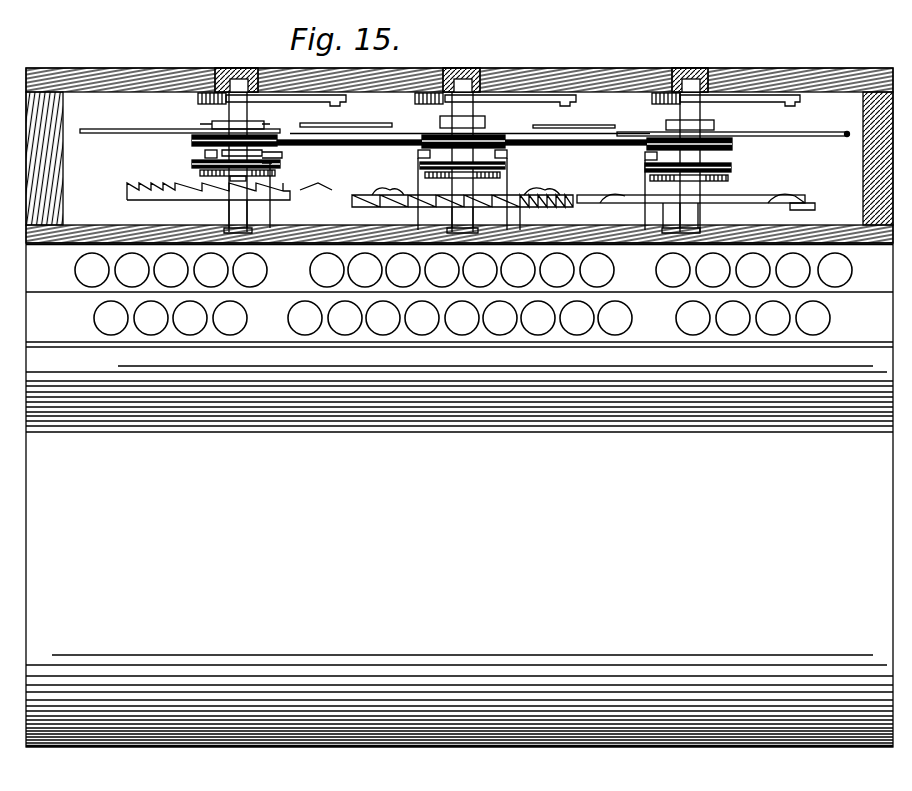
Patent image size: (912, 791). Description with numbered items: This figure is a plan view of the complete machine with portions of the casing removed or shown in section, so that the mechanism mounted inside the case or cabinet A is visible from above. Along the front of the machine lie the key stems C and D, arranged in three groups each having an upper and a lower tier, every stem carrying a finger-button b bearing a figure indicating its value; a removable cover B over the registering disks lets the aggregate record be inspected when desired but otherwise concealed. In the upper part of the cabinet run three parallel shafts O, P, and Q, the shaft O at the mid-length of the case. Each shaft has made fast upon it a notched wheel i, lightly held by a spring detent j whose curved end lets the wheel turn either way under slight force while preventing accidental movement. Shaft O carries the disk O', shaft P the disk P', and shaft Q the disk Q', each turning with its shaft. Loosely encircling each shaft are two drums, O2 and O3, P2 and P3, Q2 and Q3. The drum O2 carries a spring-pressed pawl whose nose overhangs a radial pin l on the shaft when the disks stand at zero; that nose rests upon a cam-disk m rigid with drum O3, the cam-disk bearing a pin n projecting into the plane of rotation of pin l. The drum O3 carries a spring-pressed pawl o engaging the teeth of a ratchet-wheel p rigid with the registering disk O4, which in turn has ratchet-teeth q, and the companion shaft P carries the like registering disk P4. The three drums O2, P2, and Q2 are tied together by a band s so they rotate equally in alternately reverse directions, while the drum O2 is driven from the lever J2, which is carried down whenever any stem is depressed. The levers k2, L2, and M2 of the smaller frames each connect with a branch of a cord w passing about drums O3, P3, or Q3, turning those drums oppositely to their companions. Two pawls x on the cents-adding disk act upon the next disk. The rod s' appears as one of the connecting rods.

The case or cabinet A is at (641, 78).
The removable cover B is at (300, 245).
The rods or stems C is at (463, 270).
The rods or stems D is at (462, 319).
The finger-buttons or heads b is at (442, 294).
The disk P' is at (180, 142).
The shaft P is at (234, 162).
The disk or drum P2 is at (218, 145).
The disk or drum P3 is at (220, 169).
The registering-disk P4 is at (172, 200).
The notched or fluted wheel i is at (199, 98).
The spring detent or brake j is at (300, 96).
The pawl k is at (256, 150).
The radial stud or pin l is at (206, 108).
The cam-disk m is at (282, 157).
The pin or stud n is at (205, 153).
The ratchet-wheel p is at (282, 176).
The ratchet-teeth q is at (319, 178).
The spring-pressed pawl o is at (237, 181).
The bar or lever M2 is at (271, 211).
The rod s' is at (349, 150).
The cord or band s is at (470, 148).
The disk O' is at (457, 117).
The shaft O is at (493, 162).
The disk or drum O2 is at (500, 138).
The disk or drum O3 is at (507, 168).
The registering-disk O4 is at (413, 199).
The cord or band w is at (418, 153).
The pawls x is at (580, 184).
The bar or lever L2 is at (487, 190).
The lever or bar J2 is at (548, 208).
The shaft Q is at (720, 162).
The disk Q' is at (733, 144).
The disk or drum Q2 is at (734, 146).
The disk or drum Q3 is at (733, 170).
The lever k2 is at (660, 222).